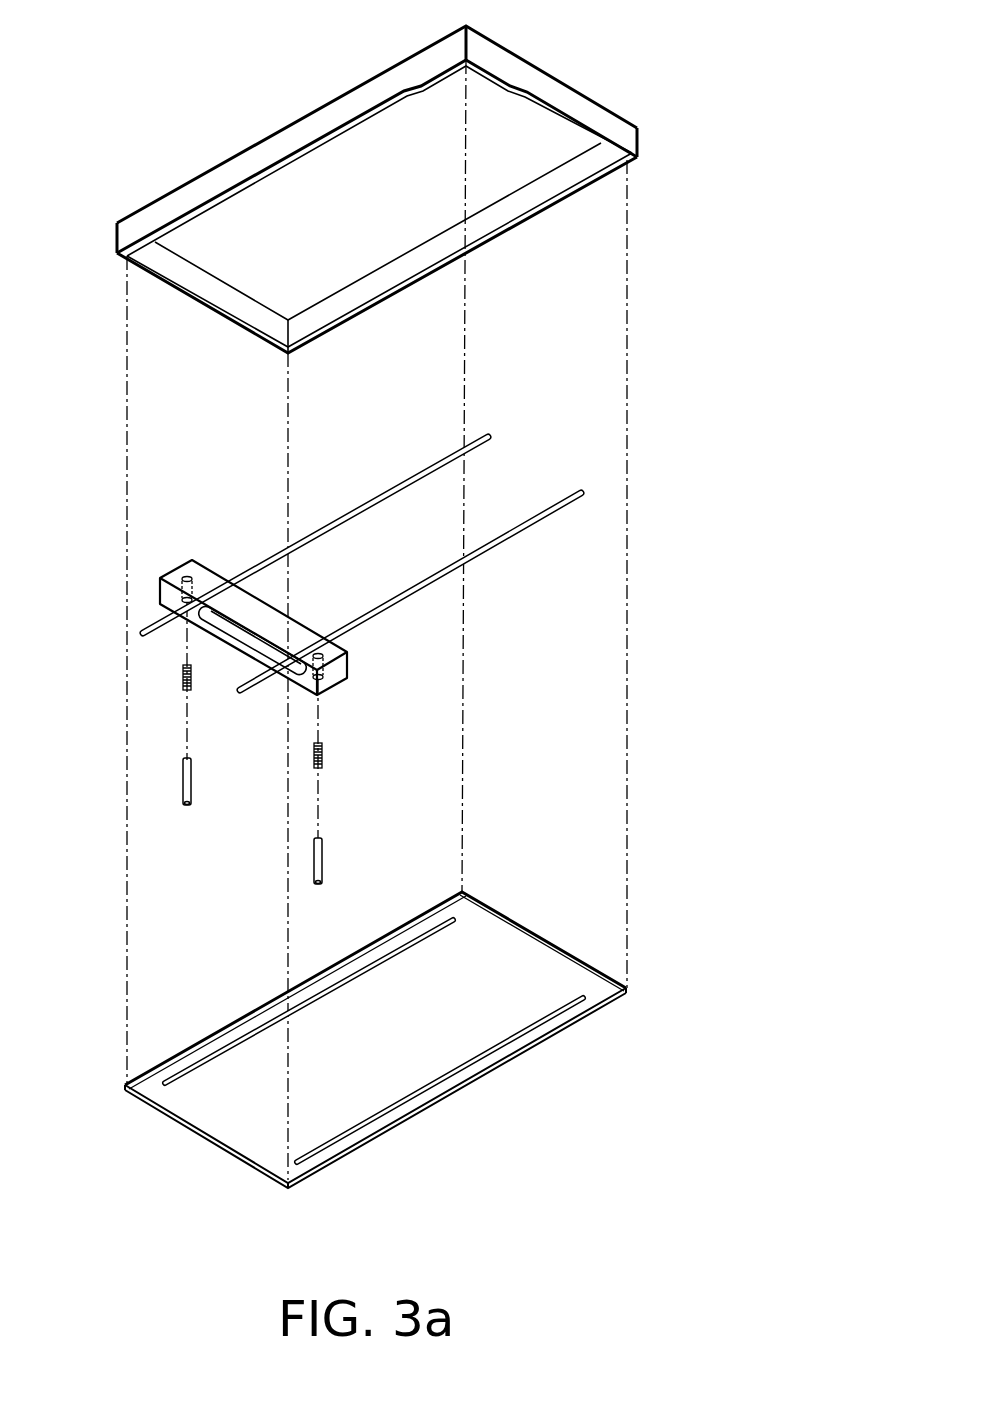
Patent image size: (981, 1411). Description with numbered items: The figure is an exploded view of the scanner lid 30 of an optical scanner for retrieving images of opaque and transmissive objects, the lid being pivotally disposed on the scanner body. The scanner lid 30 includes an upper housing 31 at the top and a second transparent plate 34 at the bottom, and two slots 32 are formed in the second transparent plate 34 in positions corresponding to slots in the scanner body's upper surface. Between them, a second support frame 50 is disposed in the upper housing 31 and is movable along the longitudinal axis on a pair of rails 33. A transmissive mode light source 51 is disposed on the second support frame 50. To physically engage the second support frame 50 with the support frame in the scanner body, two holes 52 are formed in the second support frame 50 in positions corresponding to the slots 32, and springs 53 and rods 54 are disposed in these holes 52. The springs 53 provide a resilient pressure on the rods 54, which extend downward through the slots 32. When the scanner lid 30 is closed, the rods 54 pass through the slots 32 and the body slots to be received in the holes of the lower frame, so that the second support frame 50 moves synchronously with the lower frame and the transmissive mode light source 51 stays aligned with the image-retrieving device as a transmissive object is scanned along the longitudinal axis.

The scanner lid 30 is at (749, 22).
The upper housing 31 is at (533, 63).
The slots 32 is at (297, 1163).
The rails 33 is at (487, 433).
The second transparent plate 34 is at (513, 962).
The second support frame 50 is at (249, 585).
The transmissive mode light source 51 is at (247, 636).
The holes 52 is at (160, 605).
The springs 53 is at (182, 678).
The rods 54 is at (182, 785).